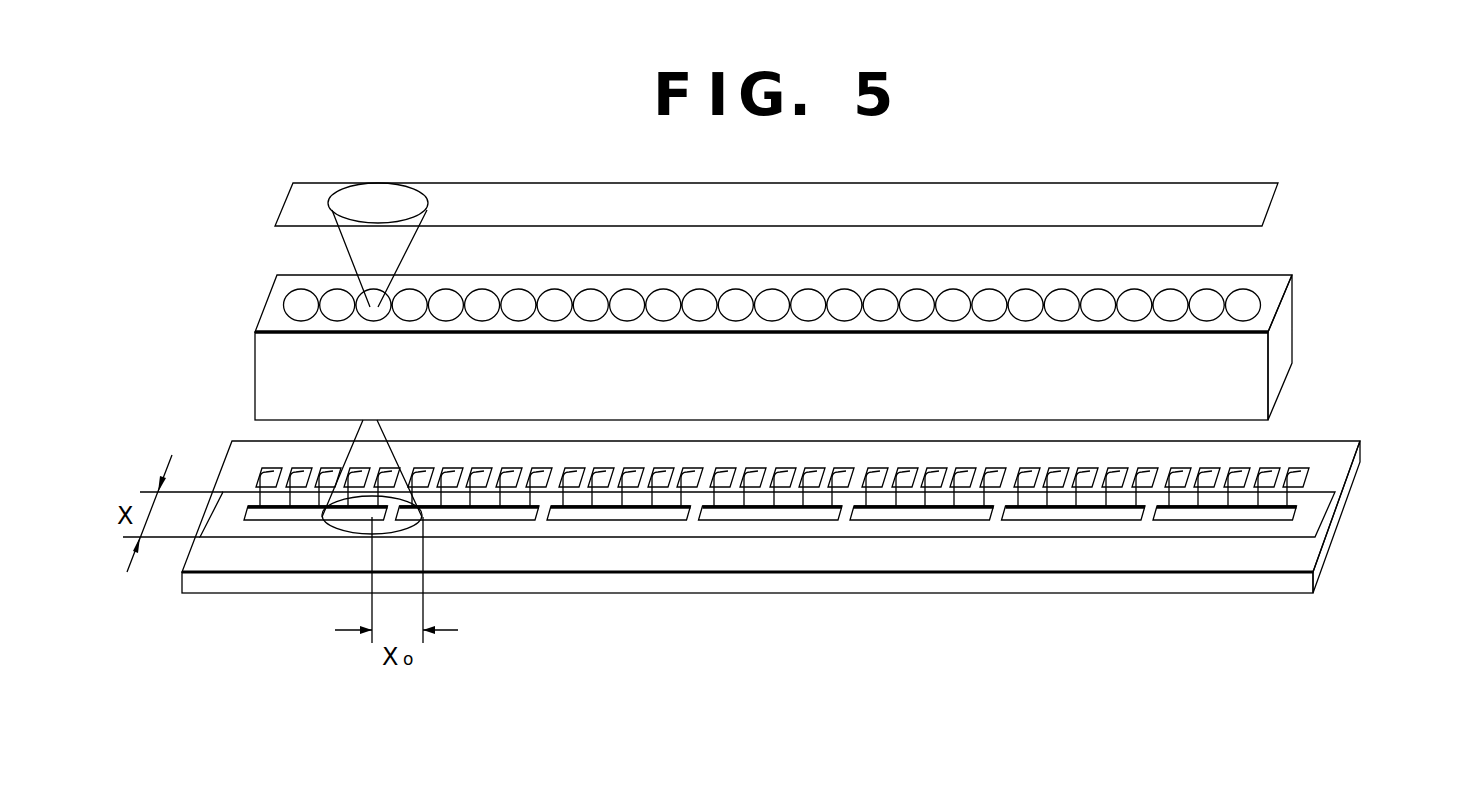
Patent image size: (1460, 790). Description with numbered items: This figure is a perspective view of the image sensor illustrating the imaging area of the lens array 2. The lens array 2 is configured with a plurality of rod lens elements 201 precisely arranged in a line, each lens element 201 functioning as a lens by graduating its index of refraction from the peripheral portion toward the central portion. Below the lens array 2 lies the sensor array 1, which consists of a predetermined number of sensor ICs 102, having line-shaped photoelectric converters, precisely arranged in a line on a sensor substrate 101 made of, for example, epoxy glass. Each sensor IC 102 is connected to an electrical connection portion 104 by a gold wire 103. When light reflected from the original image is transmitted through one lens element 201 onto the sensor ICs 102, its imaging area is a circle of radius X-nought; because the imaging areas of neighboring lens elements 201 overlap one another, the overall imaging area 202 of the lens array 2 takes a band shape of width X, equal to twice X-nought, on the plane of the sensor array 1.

The sensor array 1 is at (811, 557).
The lens array 2 is at (721, 347).
The rod lens element 201 is at (300, 303).
The overall imaging area 202 is at (277, 530).
The sensor substrate 101 is at (897, 560).
The sensor IC 102 is at (1220, 508).
The gold wire 103 is at (1292, 491).
The electrical connection portion 104 is at (1297, 473).